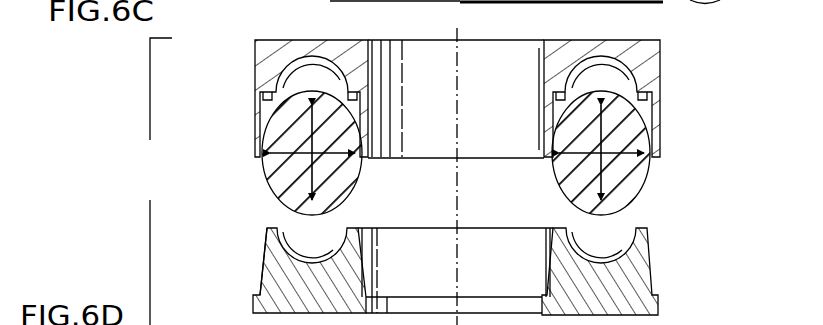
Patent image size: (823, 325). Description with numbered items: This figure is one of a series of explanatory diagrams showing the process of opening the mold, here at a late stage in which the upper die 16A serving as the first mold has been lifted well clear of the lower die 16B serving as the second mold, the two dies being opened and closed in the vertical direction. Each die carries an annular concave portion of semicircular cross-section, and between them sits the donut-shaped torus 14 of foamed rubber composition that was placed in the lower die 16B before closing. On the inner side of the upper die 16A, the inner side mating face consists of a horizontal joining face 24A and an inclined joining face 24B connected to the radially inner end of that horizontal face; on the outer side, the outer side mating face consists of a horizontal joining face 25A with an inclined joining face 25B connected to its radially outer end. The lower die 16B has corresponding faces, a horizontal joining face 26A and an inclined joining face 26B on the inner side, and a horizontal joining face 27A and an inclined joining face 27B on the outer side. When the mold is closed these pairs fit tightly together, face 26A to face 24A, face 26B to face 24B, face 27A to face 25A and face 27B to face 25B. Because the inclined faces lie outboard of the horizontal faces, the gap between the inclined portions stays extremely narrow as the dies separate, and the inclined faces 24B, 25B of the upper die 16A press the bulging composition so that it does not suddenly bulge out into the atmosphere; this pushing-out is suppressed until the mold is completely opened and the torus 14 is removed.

The donut-shaped torus 14 is at (272, 190).
The upper die 16A is at (662, 66).
The lower die 16B is at (660, 305).
The horizontal joining face 24A is at (358, 100).
The inclined joining face 24B is at (362, 163).
The horizontal joining face 25A is at (260, 95).
The inclined joining face 25B is at (258, 123).
The horizontal joining face 26A is at (358, 228).
The inclined joining face 26B is at (364, 265).
The horizontal joining face 27A is at (265, 222).
The inclined joining face 27B is at (262, 270).